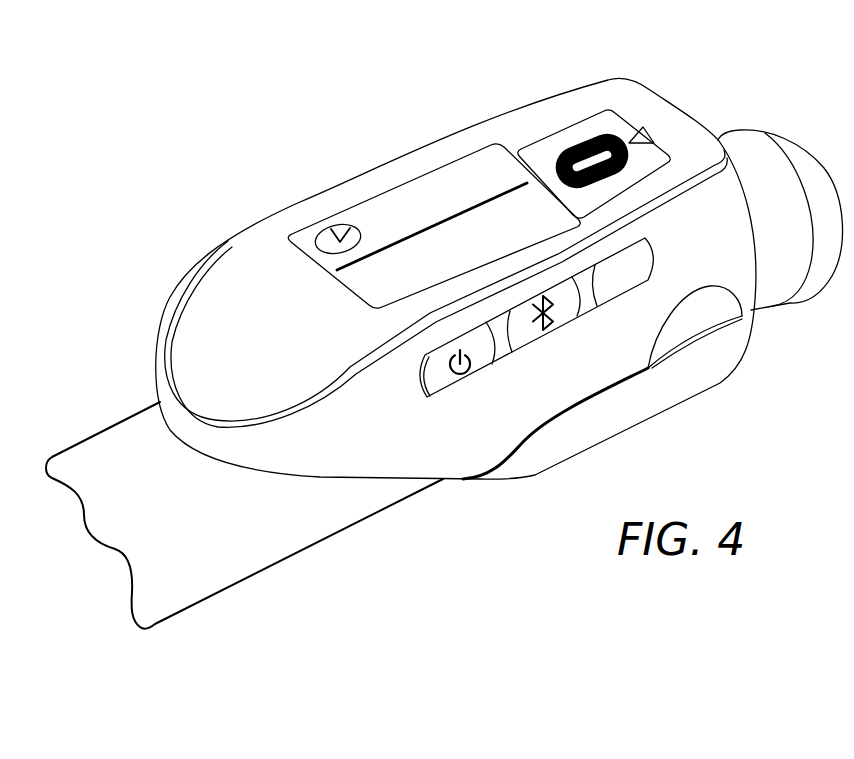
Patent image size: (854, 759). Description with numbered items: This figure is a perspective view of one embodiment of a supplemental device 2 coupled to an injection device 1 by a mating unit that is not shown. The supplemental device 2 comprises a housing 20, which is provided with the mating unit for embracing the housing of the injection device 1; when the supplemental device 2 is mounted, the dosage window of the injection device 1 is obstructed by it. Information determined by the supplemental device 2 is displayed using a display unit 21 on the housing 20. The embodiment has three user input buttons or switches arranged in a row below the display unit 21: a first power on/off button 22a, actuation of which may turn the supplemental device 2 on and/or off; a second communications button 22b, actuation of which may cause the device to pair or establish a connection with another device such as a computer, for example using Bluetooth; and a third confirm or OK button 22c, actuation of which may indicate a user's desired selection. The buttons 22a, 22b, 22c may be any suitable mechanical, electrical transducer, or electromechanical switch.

The injection device 1 is at (106, 417).
The supplemental device 2 is at (308, 177).
The housing 20 is at (318, 457).
The display unit 21 is at (492, 142).
The power on/off button 22a is at (473, 363).
The communications button 22b is at (538, 333).
The confirm or OK button 22c is at (648, 256).